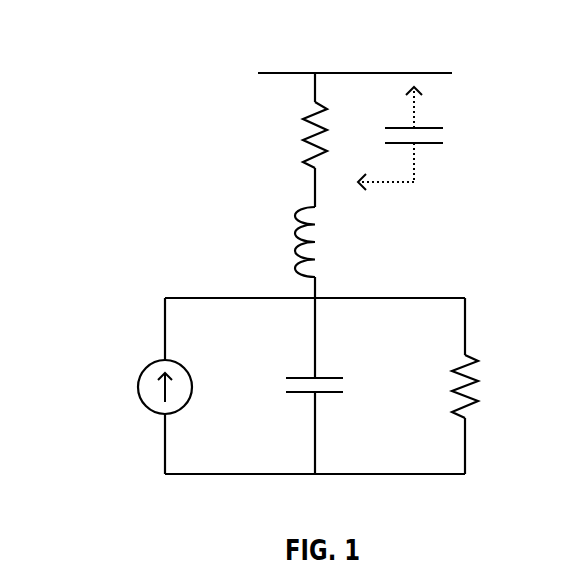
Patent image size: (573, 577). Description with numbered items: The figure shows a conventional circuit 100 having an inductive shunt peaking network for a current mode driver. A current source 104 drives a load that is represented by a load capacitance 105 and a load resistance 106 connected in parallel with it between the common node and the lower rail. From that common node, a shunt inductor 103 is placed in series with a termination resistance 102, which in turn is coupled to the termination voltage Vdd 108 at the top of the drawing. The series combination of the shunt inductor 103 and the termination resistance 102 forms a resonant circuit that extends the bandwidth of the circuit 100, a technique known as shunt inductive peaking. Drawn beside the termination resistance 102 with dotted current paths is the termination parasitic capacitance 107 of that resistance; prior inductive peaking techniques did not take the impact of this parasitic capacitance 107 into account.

The conventional circuit 100 is at (112, 88).
The termination resistance 102 is at (284, 131).
The shunt inductor 103 is at (284, 240).
The current source 104 is at (138, 381).
The load capacitance 105 is at (335, 407).
The load resistance 106 is at (483, 430).
The termination parasitic capacitance 107 is at (443, 160).
The termination voltage Vdd 108 is at (380, 72).